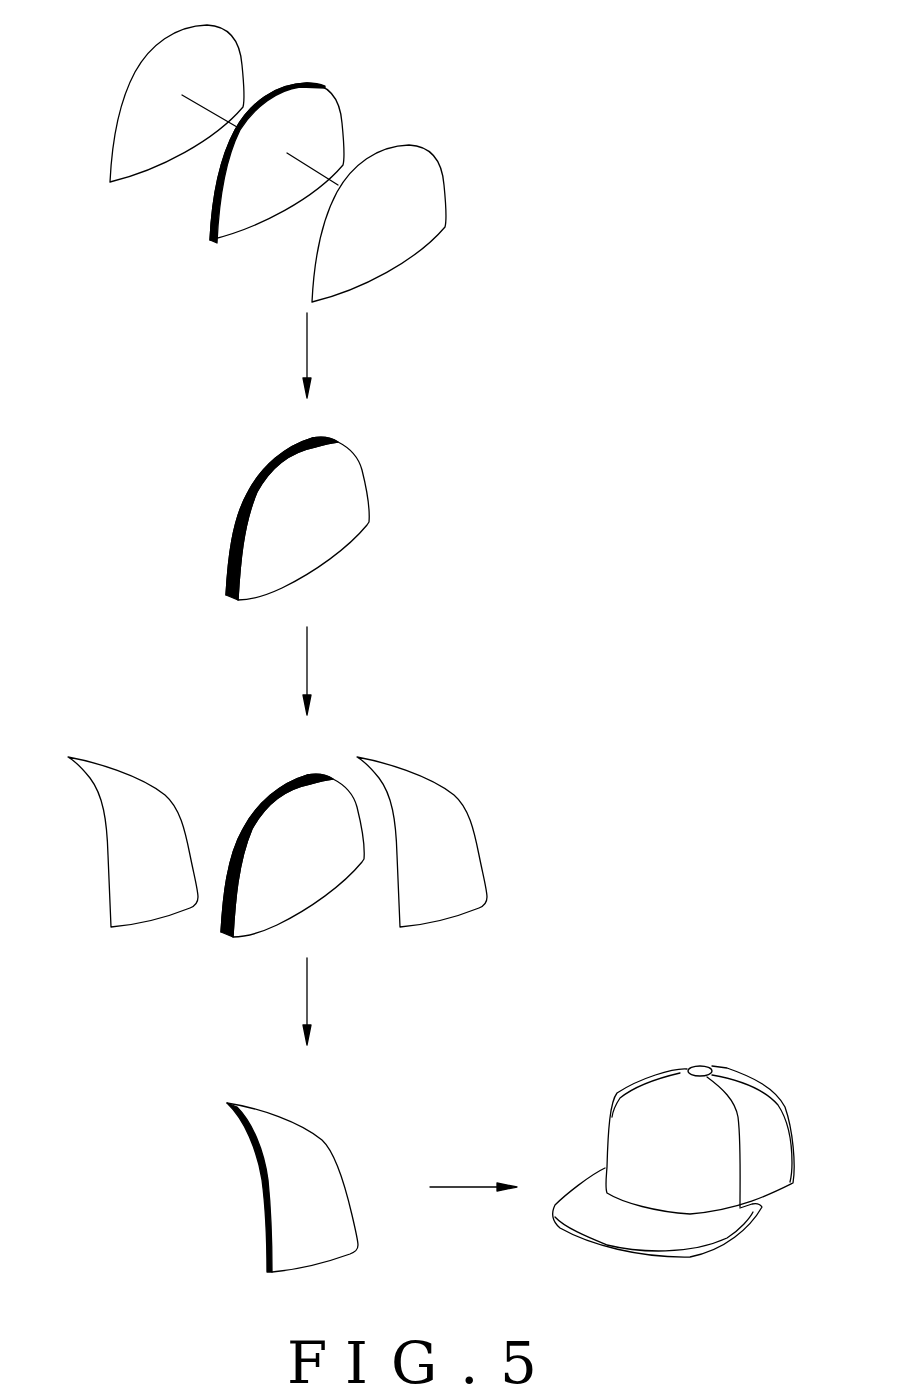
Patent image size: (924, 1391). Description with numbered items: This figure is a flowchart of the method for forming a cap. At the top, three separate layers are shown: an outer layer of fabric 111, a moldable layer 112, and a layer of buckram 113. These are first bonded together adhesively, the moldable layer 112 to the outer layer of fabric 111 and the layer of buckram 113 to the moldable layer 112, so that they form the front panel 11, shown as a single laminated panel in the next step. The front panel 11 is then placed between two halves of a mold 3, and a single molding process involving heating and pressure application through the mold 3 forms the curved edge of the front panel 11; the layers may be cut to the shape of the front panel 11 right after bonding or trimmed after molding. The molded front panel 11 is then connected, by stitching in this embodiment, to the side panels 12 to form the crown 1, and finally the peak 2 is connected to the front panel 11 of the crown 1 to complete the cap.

The crown 1 is at (722, 1029).
The peak 2 is at (683, 1235).
The mold 3 is at (122, 857).
The front panel 11 is at (233, 777).
The side panel 12 is at (767, 1112).
The outer layer of fabric 111 is at (425, 180).
The moldable layer 112 is at (337, 118).
The layer of buckram 113 is at (228, 63).